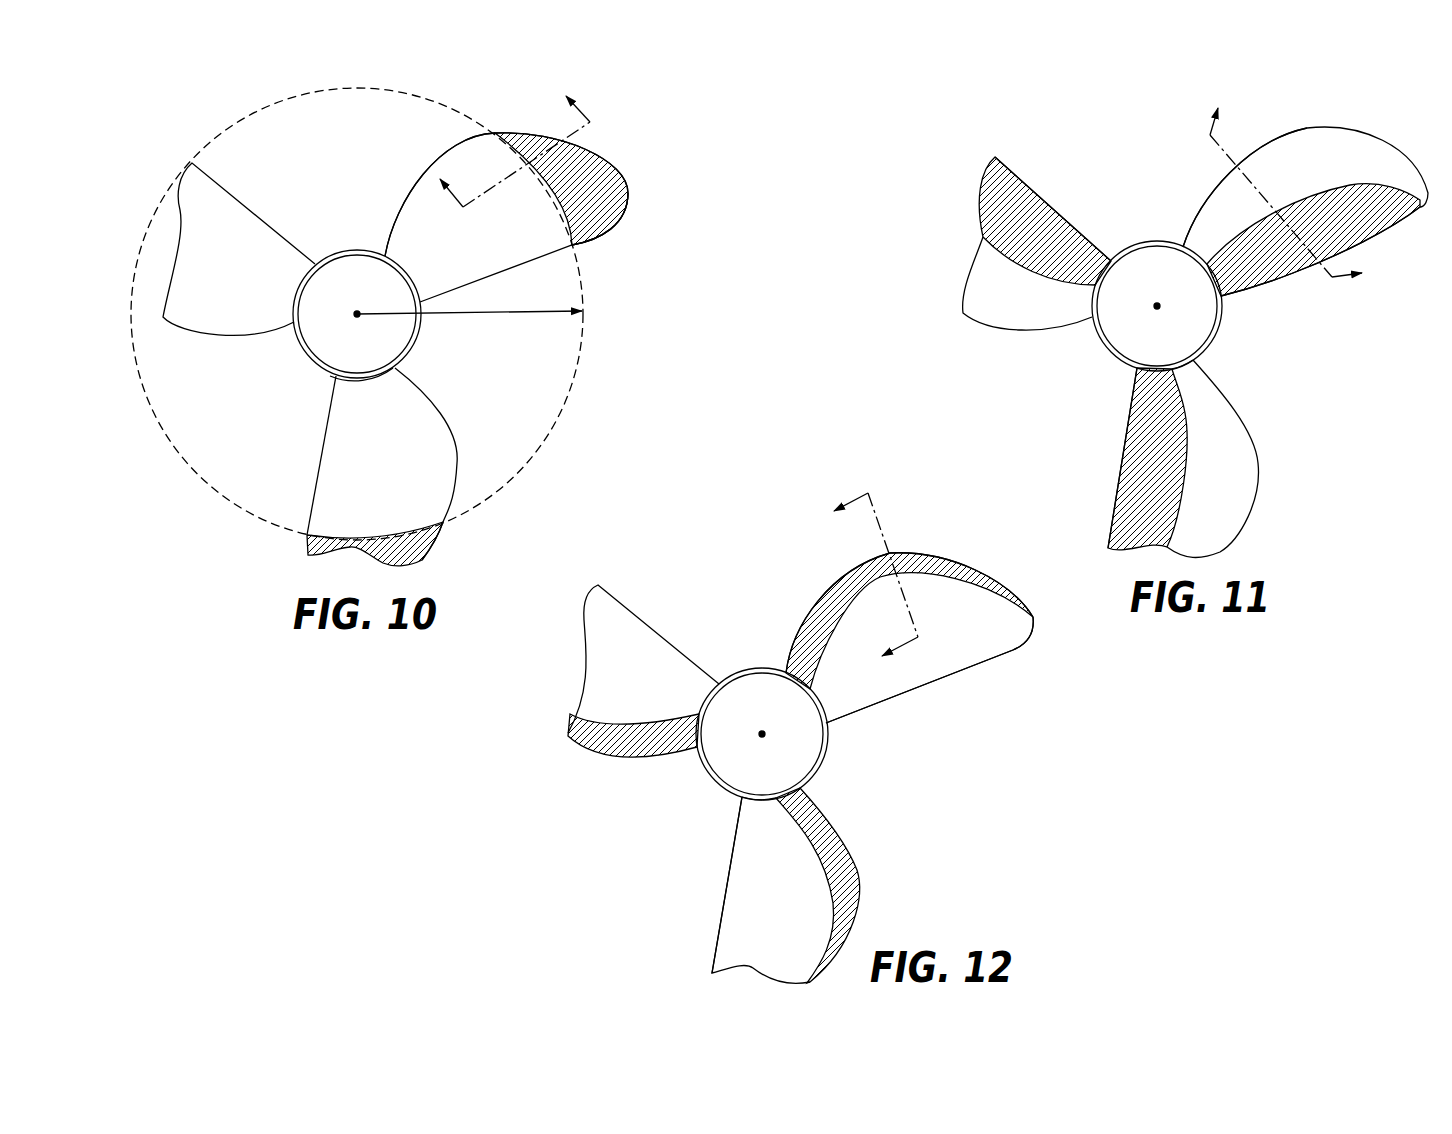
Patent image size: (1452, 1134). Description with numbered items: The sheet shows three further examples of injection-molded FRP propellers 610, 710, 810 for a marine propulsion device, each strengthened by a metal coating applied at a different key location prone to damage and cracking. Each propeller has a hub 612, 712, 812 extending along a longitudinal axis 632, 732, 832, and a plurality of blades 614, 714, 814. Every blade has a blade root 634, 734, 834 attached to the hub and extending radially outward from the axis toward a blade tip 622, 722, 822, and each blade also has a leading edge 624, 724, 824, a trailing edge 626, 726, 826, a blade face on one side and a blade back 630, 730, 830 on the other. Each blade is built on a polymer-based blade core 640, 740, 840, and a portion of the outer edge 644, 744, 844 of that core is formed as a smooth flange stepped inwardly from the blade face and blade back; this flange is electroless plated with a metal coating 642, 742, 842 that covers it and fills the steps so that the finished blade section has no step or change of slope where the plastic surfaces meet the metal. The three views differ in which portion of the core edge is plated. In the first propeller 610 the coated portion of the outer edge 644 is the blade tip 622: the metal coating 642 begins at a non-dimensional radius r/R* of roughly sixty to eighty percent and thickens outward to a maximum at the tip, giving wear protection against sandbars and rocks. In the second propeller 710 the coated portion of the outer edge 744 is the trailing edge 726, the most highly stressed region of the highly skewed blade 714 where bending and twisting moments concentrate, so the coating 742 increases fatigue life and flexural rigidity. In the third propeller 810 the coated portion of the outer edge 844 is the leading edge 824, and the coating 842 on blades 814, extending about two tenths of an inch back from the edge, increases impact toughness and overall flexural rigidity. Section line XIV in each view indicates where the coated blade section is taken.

In FIG. 10, the propeller 610 is at (596, 371).
In FIG. 10, the hub 612 is at (307, 368).
In FIG. 10, the blade 614 is at (413, 193).
In FIG. 10, the blade tip 622 is at (630, 183).
In FIG. 10, the leading edge 624 is at (457, 447).
In FIG. 10, the trailing edge 626 is at (312, 493).
In FIG. 10, the blade back 630 is at (247, 278).
In FIG. 10, the longitudinal axis 632 is at (357, 311).
In FIG. 10, the blade root 634 is at (360, 380).
In FIG. 10, the blade core 640 is at (473, 147).
In FIG. 10, the metal coating 642 is at (582, 168).
In FIG. 10, the outer edge 644 is at (624, 226).
In FIG. 11, the propeller 710 is at (1039, 142).
In FIG. 11, the hub 712 is at (1110, 362).
In FIG. 11, the blade 714 is at (1203, 207).
In FIG. 11, the blade tip 722 is at (1410, 160).
In FIG. 11, the leading edge 724 is at (1258, 442).
In FIG. 11, the trailing edge 726 is at (1110, 485).
In FIG. 11, the blade back 730 is at (1041, 313).
In FIG. 11, the longitudinal axis 732 is at (1157, 303).
In FIG. 11, the blade root 734 is at (1190, 377).
In FIG. 11, the blade core 740 is at (1295, 138).
In FIG. 11, the metal coating 742 is at (1355, 198).
In FIG. 11, the outer edge 744 is at (1294, 279).
In FIG. 12, the propeller 810 is at (636, 851).
In FIG. 12, the hub 812 is at (715, 782).
In FIG. 12, the blade 814 is at (992, 605).
In FIG. 12, the blade tip 822 is at (1035, 621).
In FIG. 12, the leading edge 824 is at (864, 877).
In FIG. 12, the trailing edge 826 is at (717, 913).
In FIG. 12, the blade back 830 is at (651, 702).
In FIG. 12, the longitudinal axis 832 is at (761, 731).
In FIG. 12, the blade root 834 is at (758, 800).
In FIG. 12, the blade core 840 is at (913, 672).
In FIG. 12, the metal coating 842 is at (817, 613).
In FIG. 12, the outer edge 844 is at (908, 553).